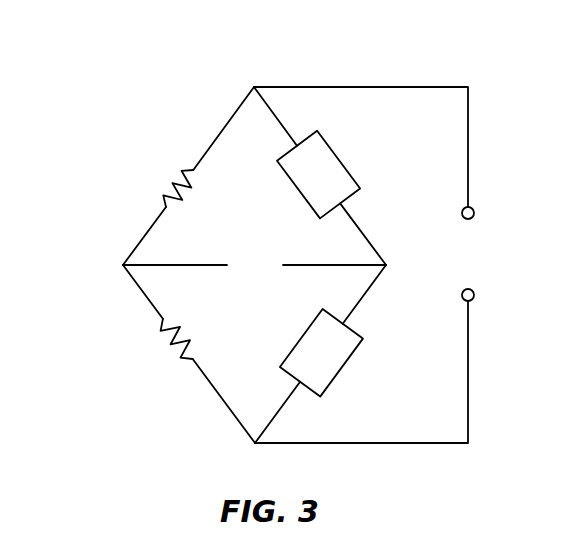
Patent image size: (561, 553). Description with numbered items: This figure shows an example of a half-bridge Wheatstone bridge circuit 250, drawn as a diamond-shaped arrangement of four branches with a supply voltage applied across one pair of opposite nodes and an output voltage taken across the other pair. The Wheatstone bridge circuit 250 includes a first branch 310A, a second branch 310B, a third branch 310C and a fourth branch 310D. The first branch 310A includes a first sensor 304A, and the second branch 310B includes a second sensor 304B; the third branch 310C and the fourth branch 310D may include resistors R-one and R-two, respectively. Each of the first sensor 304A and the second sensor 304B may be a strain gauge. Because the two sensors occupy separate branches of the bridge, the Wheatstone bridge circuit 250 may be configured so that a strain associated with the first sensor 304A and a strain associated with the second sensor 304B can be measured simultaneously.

The half-bridge Wheatstone bridge circuit 250 is at (142, 106).
The first branch 310A is at (360, 225).
The second branch 310B is at (365, 298).
The third branch 310C is at (218, 132).
The fourth branch 310D is at (138, 291).
The first sensor 304A is at (347, 159).
The second sensor 304B is at (347, 363).